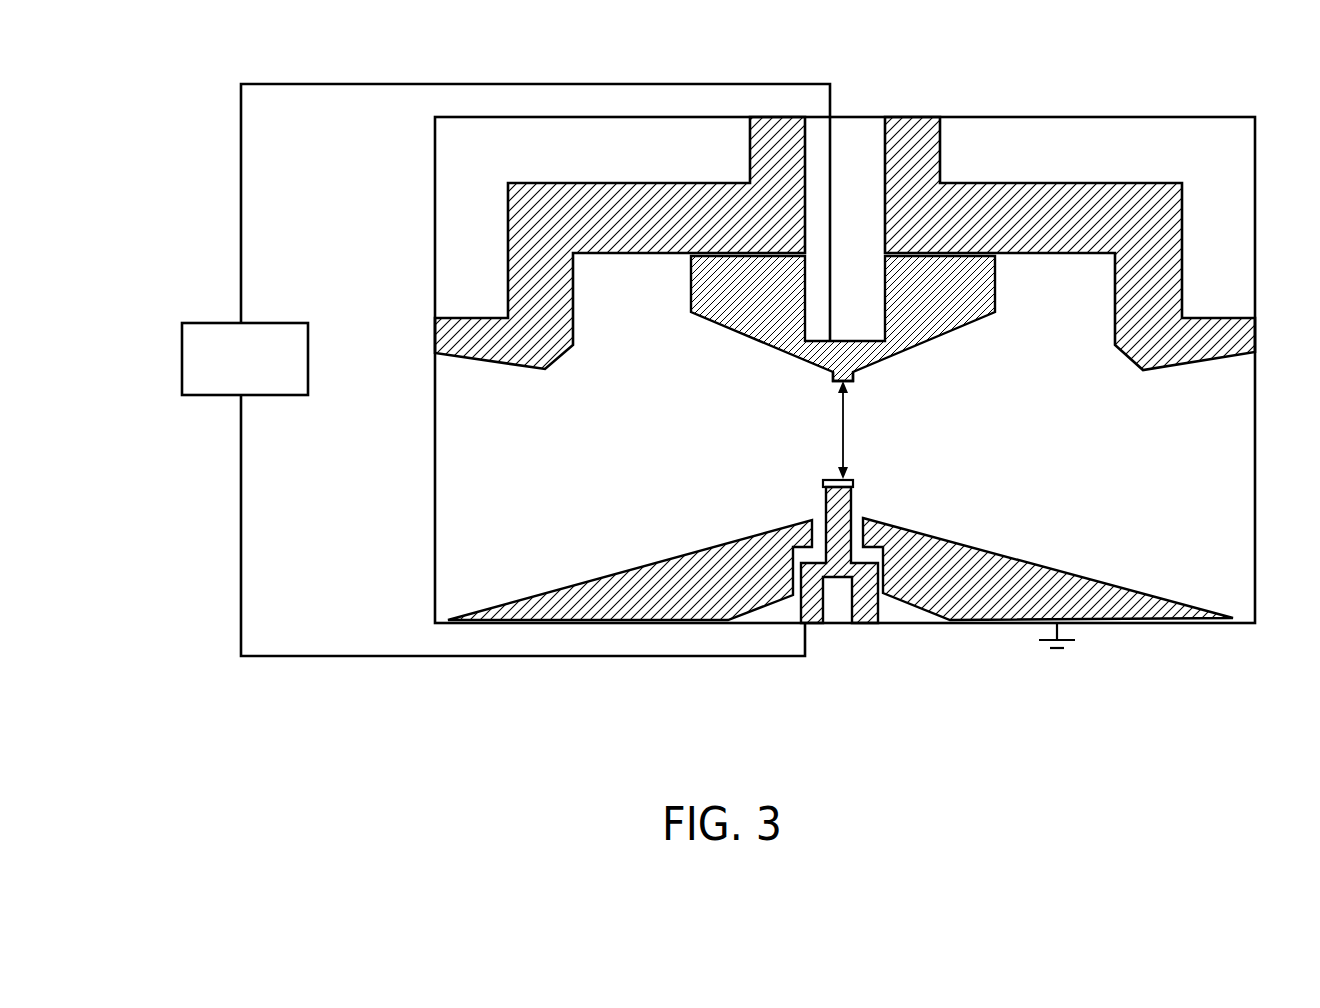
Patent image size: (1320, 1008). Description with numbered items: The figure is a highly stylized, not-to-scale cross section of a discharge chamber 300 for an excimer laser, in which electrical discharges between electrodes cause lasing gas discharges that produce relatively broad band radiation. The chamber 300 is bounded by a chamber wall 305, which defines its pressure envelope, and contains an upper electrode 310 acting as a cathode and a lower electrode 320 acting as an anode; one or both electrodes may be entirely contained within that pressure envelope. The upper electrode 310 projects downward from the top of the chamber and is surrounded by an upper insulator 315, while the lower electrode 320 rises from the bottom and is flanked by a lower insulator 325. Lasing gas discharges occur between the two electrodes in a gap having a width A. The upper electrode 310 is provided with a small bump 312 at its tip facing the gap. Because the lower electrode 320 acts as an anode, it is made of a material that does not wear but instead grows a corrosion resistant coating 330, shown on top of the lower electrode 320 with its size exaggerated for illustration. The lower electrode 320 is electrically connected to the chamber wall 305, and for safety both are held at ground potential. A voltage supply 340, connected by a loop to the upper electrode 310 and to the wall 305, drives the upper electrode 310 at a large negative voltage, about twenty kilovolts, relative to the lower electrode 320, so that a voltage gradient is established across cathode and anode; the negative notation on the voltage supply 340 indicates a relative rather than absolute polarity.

The chamber 300 is at (1143, 485).
The chamber wall 305 is at (1255, 525).
The upper electrode 310 is at (970, 320).
The small bump 312 is at (833, 380).
The upper insulator 315 is at (575, 320).
The lower electrode 320 is at (823, 507).
The lower insulator 325 is at (612, 573).
The corrosion resistant coating 330 is at (855, 482).
The voltage supply 340 is at (308, 362).